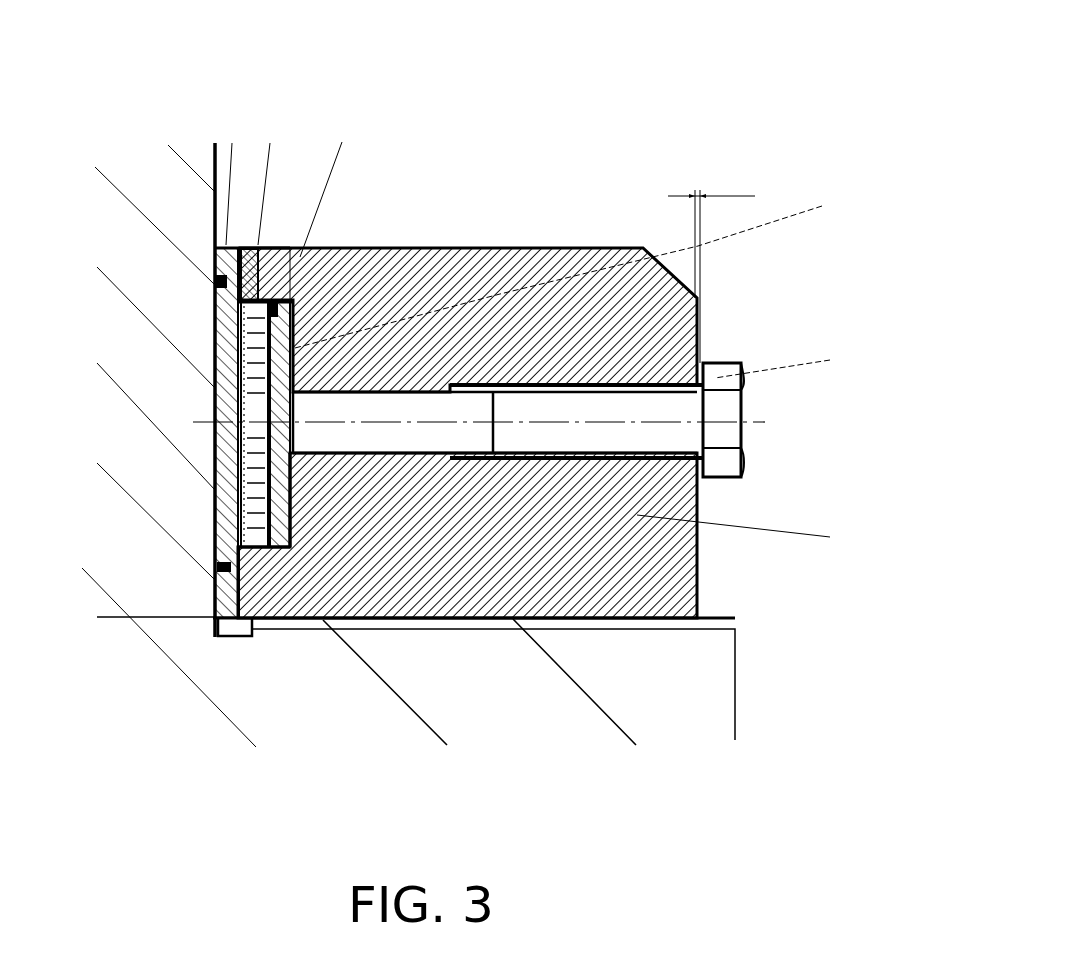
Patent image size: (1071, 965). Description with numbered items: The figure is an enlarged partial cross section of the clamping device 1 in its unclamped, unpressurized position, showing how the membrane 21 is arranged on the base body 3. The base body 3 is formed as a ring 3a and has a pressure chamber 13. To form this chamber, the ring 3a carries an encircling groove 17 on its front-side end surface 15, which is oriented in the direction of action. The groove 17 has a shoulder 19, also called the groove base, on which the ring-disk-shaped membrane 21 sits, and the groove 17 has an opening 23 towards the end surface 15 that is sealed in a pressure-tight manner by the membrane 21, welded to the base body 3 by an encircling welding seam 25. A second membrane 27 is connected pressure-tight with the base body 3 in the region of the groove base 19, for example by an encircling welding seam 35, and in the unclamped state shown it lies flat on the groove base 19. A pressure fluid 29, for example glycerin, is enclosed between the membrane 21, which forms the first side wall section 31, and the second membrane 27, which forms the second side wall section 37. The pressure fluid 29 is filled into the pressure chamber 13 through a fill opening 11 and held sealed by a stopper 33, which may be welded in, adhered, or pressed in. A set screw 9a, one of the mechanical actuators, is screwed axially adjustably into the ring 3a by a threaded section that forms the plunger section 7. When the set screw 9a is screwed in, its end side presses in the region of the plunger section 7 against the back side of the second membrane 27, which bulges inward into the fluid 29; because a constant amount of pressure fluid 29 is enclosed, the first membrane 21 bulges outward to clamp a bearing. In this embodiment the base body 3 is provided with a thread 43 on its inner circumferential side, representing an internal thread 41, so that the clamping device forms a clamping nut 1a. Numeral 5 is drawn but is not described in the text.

The clamping device 1 is at (441, 403).
The clamping nut 1a is at (688, 166).
The base body 3 is at (470, 348).
The ring 3a is at (563, 300).
The base plate 5 is at (698, 602).
The plunger section 7 is at (345, 434).
The set screw 9a is at (723, 377).
The fill opening 11 is at (258, 250).
The pressure chamber 13 is at (255, 424).
The end surface 15 is at (213, 606).
The groove 17 is at (250, 550).
The shoulder 19 is at (219, 575).
The membrane 21 is at (171, 460).
The opening 23 is at (252, 466).
The welding seam 25 is at (222, 283).
The second membrane 27 is at (282, 383).
The pressure fluid 29 is at (252, 345).
The first side wall section 31 is at (233, 423).
The stopper 33 is at (252, 247).
The welding seam 35 is at (273, 280).
The second side wall section 37 is at (288, 472).
The internal thread 41 is at (241, 669).
The thread 43 is at (194, 616).